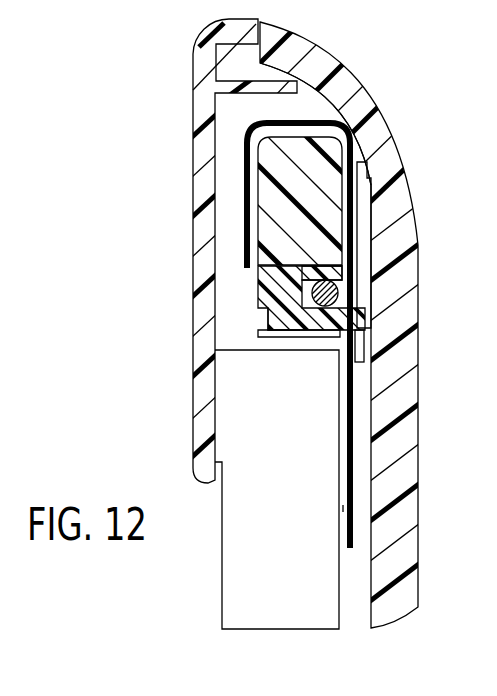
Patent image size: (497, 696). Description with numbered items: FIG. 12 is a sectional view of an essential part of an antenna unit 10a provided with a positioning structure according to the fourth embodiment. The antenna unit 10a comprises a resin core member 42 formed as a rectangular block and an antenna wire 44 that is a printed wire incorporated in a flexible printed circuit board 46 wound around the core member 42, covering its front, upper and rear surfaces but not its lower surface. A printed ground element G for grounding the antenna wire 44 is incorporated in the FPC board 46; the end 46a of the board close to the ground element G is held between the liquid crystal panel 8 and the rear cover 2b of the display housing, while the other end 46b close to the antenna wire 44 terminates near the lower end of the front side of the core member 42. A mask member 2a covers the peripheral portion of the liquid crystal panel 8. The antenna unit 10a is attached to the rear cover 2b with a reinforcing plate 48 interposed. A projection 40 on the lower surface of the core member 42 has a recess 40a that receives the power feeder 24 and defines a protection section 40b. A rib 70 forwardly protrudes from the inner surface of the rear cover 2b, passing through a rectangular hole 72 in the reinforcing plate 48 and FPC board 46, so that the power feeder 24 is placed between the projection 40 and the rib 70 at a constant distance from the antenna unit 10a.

The mask member 2a is at (212, 242).
The rear cover 2b is at (400, 154).
The antenna unit 10a is at (334, 100).
The antenna wire 44 is at (277, 395).
The flexible printed circuit board 46 is at (247, 130).
The end of the FPC board 46a is at (350, 556).
The end of the FPC board 46b is at (247, 270).
The core member 42 is at (272, 201).
The projection 40 is at (259, 302).
The recess 40a is at (308, 331).
The protection section 40b is at (264, 331).
The rib 70 is at (283, 331).
The power feeder 24 is at (340, 298).
The reinforcing plate 48 is at (360, 268).
The rectangular hole 72 is at (364, 335).
The liquid crystal panel 8 is at (222, 563).
The ground element G is at (346, 508).